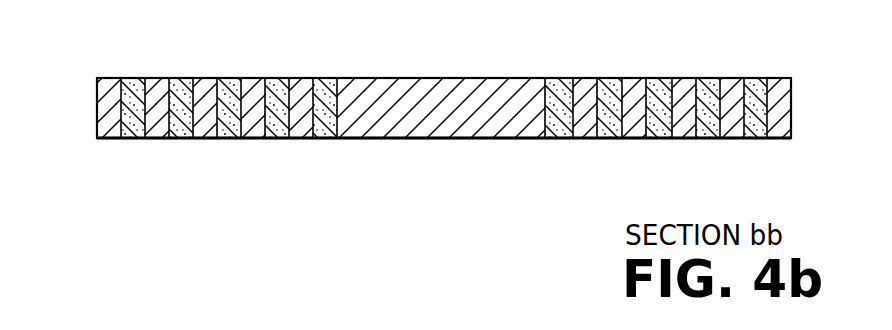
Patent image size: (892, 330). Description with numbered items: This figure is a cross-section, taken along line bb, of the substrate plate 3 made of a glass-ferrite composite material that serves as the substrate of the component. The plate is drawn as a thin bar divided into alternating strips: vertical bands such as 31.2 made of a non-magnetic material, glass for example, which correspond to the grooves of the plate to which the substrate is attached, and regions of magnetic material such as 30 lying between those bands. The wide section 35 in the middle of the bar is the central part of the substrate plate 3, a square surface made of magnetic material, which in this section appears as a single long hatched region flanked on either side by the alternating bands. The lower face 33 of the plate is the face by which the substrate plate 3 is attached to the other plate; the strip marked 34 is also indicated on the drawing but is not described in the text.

The substrate plate 3 is at (792, 107).
The magnetic material 30 is at (110, 78).
The vertical band 31.2 is at (138, 78).
The face 33 is at (658, 149).
The insulating strip 34 is at (704, 72).
The central part 35 is at (505, 96).